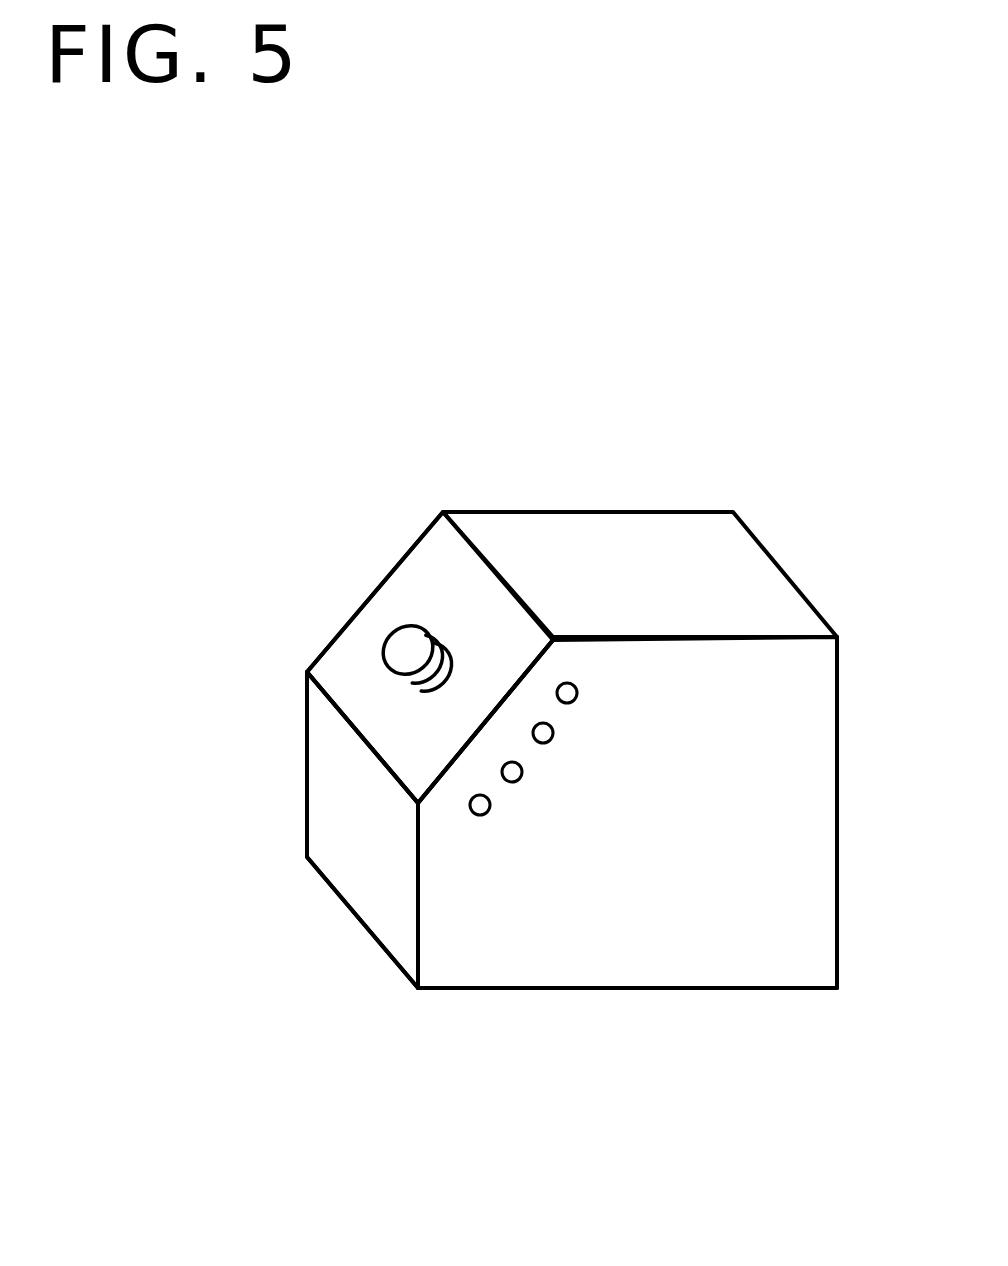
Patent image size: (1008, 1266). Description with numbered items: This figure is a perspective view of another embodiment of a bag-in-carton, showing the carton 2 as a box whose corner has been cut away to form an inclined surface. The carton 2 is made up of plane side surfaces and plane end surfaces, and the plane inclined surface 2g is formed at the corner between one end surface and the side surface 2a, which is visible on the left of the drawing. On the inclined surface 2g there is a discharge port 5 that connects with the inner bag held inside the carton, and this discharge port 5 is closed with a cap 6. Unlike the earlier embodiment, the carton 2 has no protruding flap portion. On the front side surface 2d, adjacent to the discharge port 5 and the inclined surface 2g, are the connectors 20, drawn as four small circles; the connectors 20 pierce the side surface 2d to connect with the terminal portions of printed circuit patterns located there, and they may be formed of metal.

The carton 2 is at (790, 578).
The side surface 2a is at (355, 867).
The side surface 2d is at (663, 948).
The inclined surface 2g is at (427, 568).
The discharge port 5 is at (445, 660).
The cap 6 is at (397, 645).
The connectors 20 is at (490, 805).